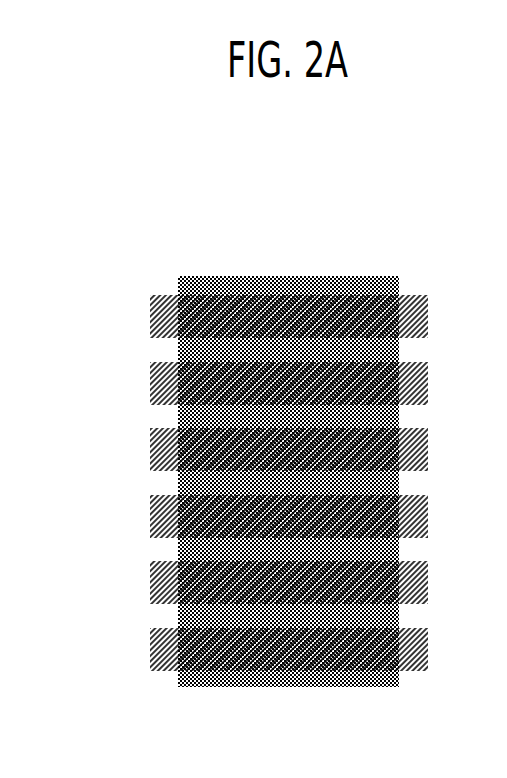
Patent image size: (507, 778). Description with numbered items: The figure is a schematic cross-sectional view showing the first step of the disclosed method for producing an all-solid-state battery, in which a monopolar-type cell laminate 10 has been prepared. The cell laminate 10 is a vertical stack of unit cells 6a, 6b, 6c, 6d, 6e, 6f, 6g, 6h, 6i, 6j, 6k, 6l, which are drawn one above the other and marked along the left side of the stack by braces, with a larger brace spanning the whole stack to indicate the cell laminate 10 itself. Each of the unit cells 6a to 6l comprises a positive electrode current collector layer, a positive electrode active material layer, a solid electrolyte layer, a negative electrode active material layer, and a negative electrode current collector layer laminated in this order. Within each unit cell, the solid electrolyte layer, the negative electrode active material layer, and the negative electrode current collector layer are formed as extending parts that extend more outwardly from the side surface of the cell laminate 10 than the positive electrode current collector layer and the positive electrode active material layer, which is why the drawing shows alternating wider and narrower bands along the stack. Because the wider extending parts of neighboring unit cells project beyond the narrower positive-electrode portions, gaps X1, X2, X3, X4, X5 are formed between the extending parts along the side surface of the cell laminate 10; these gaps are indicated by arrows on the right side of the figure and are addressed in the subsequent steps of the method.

The cell laminate 10 is at (233, 481).
The unit cell 6a is at (146, 281).
The unit cell 6b is at (146, 315).
The unit cell 6c is at (146, 349).
The unit cell 6d is at (146, 381).
The unit cell 6e is at (146, 416).
The unit cell 6f is at (146, 448).
The unit cell 6g is at (146, 482).
The unit cell 6h is at (146, 515).
The unit cell 6i is at (146, 549).
The unit cell 6j is at (146, 583).
The unit cell 6k is at (146, 616).
The unit cell 6l is at (268, 668).
The gap X1 is at (419, 350).
The gap X2 is at (419, 417).
The gap X3 is at (419, 481).
The gap X4 is at (419, 550).
The gap X5 is at (419, 614).